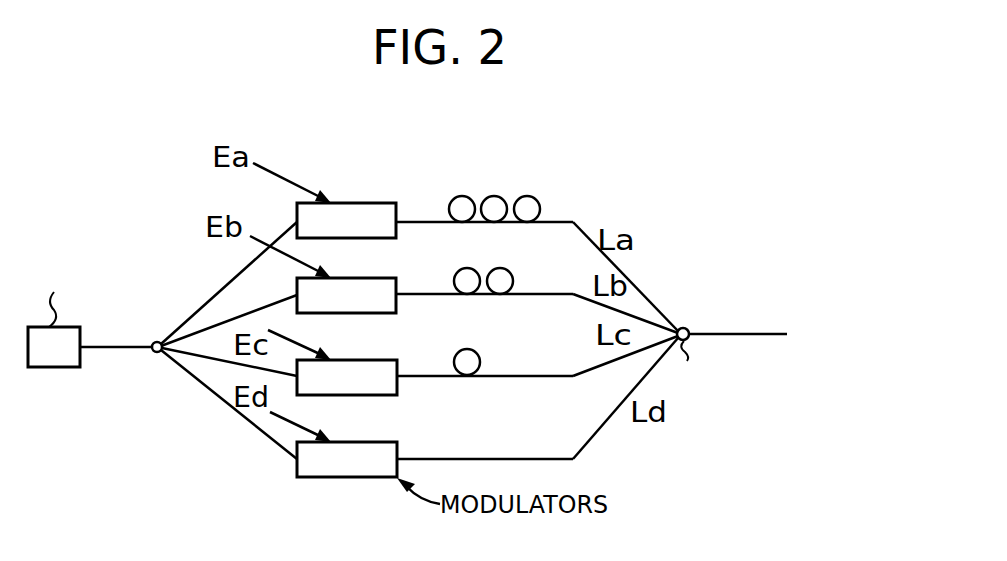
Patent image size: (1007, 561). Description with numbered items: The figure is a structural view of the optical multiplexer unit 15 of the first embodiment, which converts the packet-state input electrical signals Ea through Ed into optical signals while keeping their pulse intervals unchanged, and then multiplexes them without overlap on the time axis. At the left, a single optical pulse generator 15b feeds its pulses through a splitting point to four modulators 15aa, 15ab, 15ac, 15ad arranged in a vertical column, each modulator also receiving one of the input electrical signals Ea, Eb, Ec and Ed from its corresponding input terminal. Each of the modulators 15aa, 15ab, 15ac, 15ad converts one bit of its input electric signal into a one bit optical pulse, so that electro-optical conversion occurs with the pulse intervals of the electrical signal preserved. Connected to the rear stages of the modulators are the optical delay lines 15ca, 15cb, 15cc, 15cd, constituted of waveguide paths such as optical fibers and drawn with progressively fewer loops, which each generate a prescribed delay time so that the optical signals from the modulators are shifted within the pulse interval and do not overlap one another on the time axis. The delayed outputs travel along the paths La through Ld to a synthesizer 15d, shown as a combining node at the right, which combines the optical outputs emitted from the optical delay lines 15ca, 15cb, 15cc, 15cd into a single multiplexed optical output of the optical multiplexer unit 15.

The optical multiplexer unit 15 is at (643, 454).
The optical pulse generator 15b is at (55, 367).
The modulator 15aa is at (371, 203).
The modulator 15ab is at (363, 278).
The modulator 15ac is at (366, 360).
The modulator 15ad is at (366, 442).
The optical delay line 15ca is at (551, 197).
The optical delay line 15cb is at (452, 262).
The optical delay line 15cc is at (471, 350).
The optical delay line 15cd is at (495, 459).
The synthesizer 15d is at (685, 328).